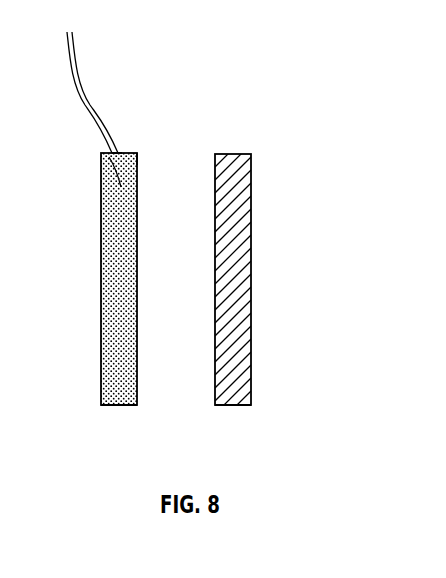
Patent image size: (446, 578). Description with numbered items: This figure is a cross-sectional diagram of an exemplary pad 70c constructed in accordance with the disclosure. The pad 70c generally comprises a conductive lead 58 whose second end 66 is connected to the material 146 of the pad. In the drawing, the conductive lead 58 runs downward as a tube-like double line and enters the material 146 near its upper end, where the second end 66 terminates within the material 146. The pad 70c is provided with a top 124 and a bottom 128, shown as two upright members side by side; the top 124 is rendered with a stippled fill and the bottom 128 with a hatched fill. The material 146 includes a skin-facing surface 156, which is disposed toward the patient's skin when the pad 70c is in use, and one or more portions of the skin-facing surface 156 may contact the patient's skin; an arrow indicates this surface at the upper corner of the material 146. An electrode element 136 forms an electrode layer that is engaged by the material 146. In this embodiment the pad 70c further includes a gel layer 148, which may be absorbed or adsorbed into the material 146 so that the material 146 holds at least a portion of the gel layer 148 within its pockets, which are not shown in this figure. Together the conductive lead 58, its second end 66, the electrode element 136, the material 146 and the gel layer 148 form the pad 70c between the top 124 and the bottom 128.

The pad 70c is at (305, 108).
The top 124 is at (100, 377).
The material 146 is at (118, 405).
The bottom 128 is at (251, 342).
The gel layer 148 is at (232, 405).
The conductive lead 58 is at (96, 107).
The electrode element 136 is at (100, 153).
The second end 66 is at (122, 153).
The skin-facing surface 156 is at (148, 157).